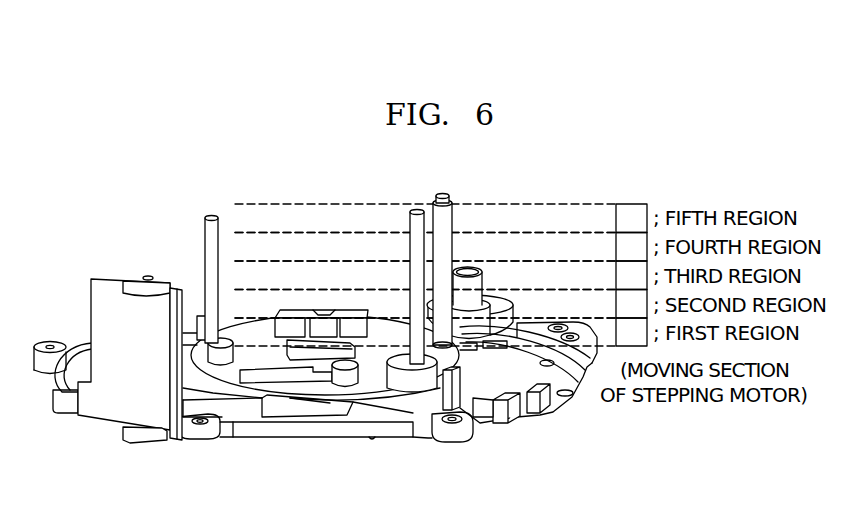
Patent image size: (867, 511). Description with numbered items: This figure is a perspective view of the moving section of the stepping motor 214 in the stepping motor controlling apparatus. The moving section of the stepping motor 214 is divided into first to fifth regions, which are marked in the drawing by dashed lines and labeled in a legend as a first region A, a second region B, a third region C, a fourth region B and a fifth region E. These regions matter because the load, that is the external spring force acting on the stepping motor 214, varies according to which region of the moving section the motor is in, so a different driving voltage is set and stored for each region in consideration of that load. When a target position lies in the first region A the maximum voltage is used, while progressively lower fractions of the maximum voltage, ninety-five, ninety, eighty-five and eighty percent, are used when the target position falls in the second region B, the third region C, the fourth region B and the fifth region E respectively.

The stepping motor 214 is at (457, 350).
The first region A is at (441, 332).
The second and fourth regions B is at (441, 276).
The third region C is at (441, 275).
The fifth region E is at (441, 218).